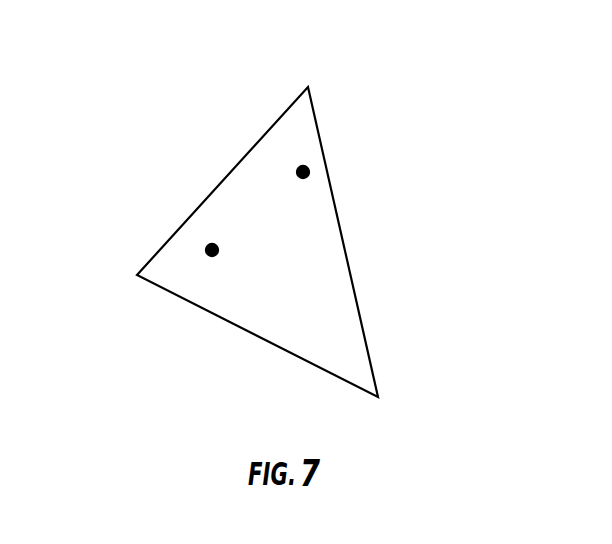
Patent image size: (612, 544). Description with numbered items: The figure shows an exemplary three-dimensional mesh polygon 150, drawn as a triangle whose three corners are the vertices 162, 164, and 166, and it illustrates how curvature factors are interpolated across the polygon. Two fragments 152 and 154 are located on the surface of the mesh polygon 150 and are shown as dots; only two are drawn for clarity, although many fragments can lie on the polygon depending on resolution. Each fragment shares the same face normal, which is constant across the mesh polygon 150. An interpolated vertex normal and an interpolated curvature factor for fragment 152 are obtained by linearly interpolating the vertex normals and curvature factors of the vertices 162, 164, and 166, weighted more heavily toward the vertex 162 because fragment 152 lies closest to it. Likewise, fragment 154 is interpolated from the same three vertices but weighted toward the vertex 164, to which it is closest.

The mesh polygon 150 is at (357, 295).
The fragment 152 is at (212, 243).
The fragment 154 is at (309, 170).
The vertex 162 is at (137, 275).
The vertex 164 is at (309, 87).
The vertex 166 is at (378, 397).